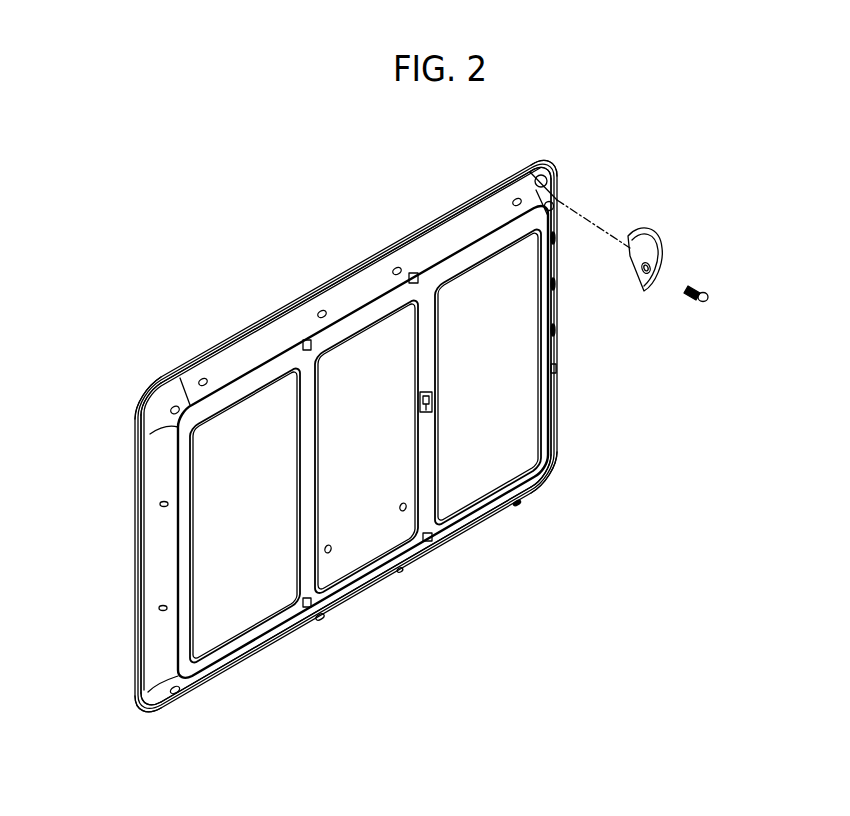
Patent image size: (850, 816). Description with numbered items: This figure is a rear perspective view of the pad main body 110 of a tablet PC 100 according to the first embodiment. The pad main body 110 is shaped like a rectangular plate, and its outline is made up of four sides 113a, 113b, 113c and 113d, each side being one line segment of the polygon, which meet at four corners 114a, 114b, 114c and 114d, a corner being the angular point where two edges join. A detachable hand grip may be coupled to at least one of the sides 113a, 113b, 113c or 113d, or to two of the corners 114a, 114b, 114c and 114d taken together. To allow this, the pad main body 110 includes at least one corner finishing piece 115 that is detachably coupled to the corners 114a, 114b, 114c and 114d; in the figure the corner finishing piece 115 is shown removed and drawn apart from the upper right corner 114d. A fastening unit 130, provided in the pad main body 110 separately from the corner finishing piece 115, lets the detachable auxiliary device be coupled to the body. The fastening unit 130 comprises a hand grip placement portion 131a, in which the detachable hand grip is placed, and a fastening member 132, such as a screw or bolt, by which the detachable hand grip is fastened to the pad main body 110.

The tablet PC 100 is at (130, 182).
The pad main body 110 is at (235, 276).
The side 113a is at (322, 283).
The side 113b is at (135, 552).
The side 113c is at (293, 638).
The side 113d is at (558, 400).
The corner 114a is at (138, 404).
The corner 114b is at (148, 708).
The corner 114c is at (552, 480).
The corner 114d is at (532, 166).
The corner finishing piece 115 is at (642, 279).
The fastening unit 130 is at (766, 185).
The hand grip placement portion 131a is at (558, 180).
The fastening member 132 is at (706, 295).